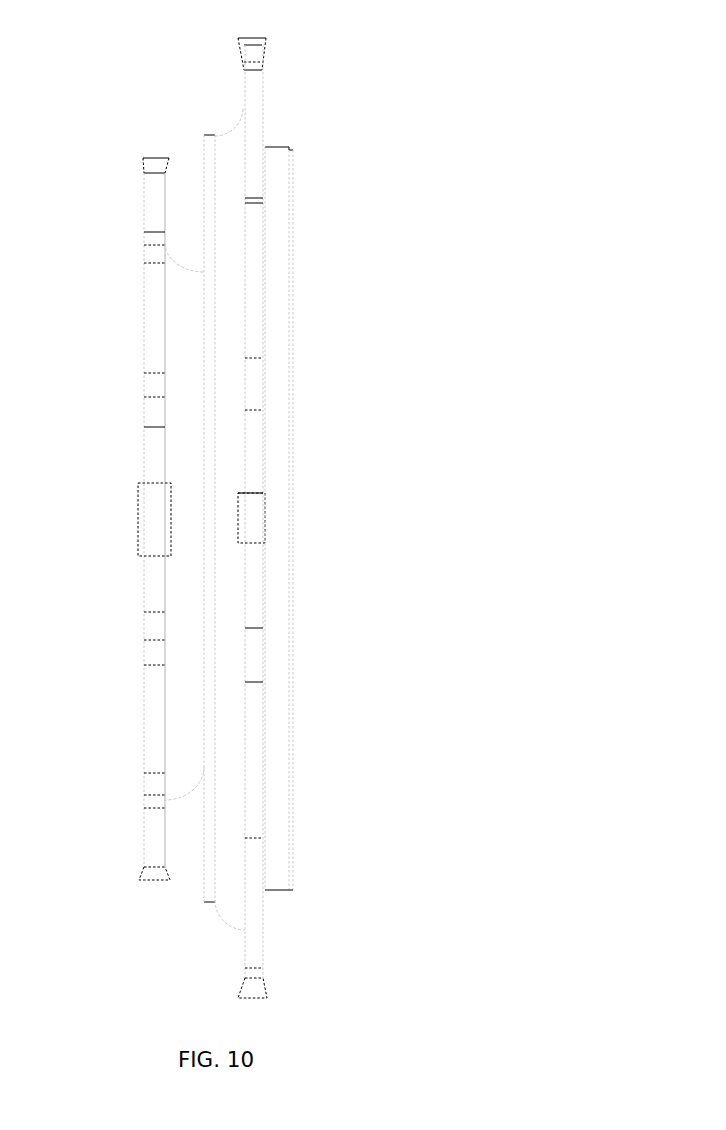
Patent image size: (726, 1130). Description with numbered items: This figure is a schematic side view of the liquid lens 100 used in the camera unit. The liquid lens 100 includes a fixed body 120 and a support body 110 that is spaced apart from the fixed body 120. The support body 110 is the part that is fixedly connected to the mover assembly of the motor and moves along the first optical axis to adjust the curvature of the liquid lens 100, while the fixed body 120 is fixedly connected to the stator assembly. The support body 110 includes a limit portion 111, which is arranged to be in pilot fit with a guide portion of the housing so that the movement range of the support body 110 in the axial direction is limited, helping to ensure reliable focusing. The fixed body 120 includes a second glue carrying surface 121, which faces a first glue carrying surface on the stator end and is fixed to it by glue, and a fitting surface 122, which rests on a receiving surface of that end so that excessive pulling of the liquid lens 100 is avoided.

The liquid lens 100 is at (282, 126).
The support body 110 is at (158, 357).
The limit portion 111 is at (152, 177).
The fixed body 120 is at (282, 453).
The second glue carrying surface 121 is at (242, 860).
The fitting surface 122 is at (207, 822).